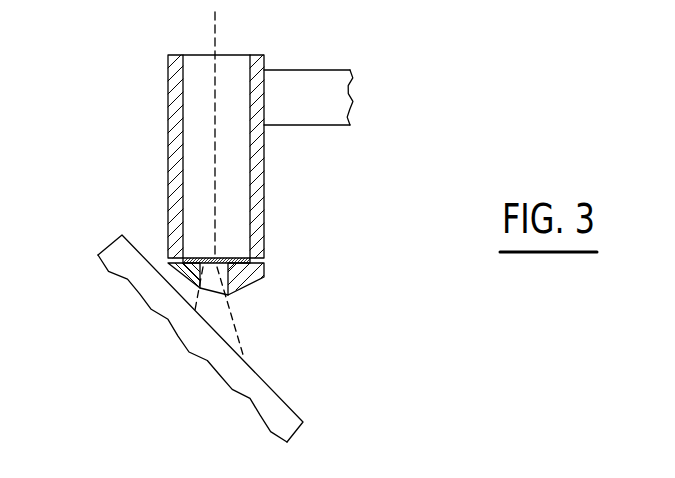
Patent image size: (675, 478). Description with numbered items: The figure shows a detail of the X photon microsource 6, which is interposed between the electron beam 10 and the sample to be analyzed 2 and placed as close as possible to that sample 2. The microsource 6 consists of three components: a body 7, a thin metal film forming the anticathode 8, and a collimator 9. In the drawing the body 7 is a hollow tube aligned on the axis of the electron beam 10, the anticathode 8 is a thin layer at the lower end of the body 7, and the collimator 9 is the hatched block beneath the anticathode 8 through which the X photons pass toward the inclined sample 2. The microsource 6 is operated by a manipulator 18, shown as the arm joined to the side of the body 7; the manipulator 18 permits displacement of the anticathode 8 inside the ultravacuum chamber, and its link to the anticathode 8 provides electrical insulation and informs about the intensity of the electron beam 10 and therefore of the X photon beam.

The sample to be analyzed 2 is at (150, 288).
The X photon microsource 6 is at (155, 146).
The body 7 is at (257, 178).
The anticathode 8 is at (226, 262).
The collimator 9 is at (247, 283).
The electron beam 10 is at (215, 40).
The manipulator 18 is at (325, 105).